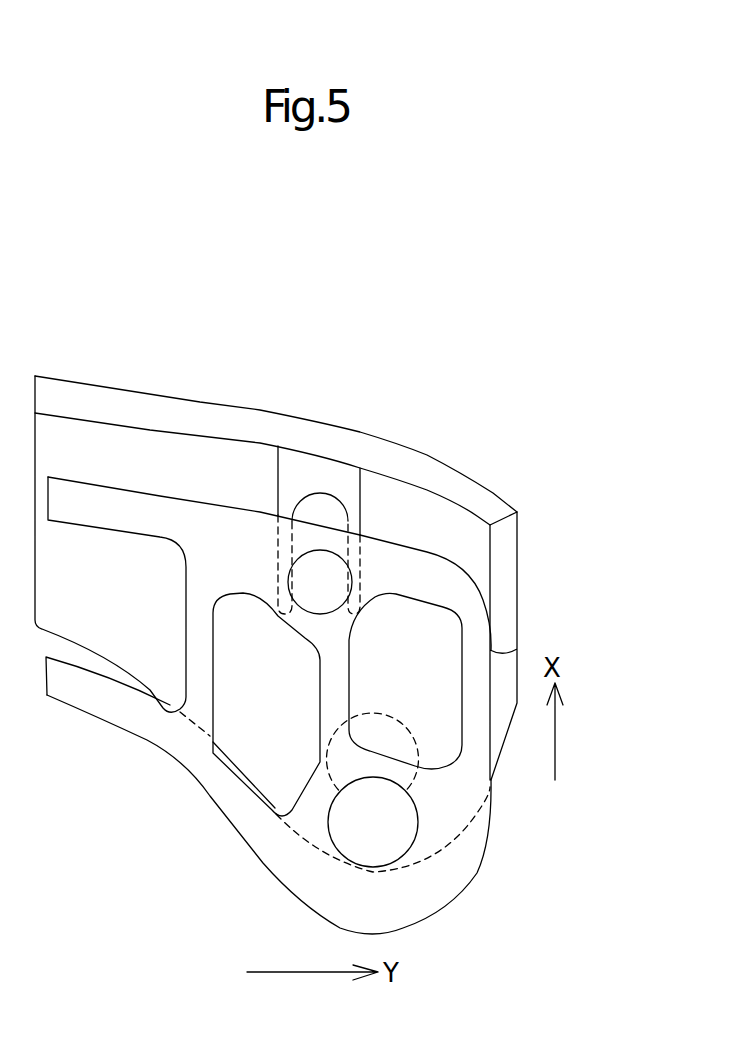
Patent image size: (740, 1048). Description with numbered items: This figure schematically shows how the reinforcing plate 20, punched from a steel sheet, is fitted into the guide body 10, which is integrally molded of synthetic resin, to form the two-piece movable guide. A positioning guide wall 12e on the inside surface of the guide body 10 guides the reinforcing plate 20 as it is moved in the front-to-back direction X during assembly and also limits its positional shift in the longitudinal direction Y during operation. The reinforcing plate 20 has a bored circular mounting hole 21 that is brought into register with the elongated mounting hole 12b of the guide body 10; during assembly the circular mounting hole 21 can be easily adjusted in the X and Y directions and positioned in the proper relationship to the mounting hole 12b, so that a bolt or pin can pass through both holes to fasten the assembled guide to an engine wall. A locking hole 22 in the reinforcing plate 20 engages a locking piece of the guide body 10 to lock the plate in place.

The guide body 10 is at (168, 432).
The mounting hole 12b is at (394, 726).
The positioning guide wall 12e is at (512, 592).
The reinforcing plate 20 is at (160, 736).
The circular mounting hole 21 is at (403, 842).
The locking hole 22 is at (332, 583).